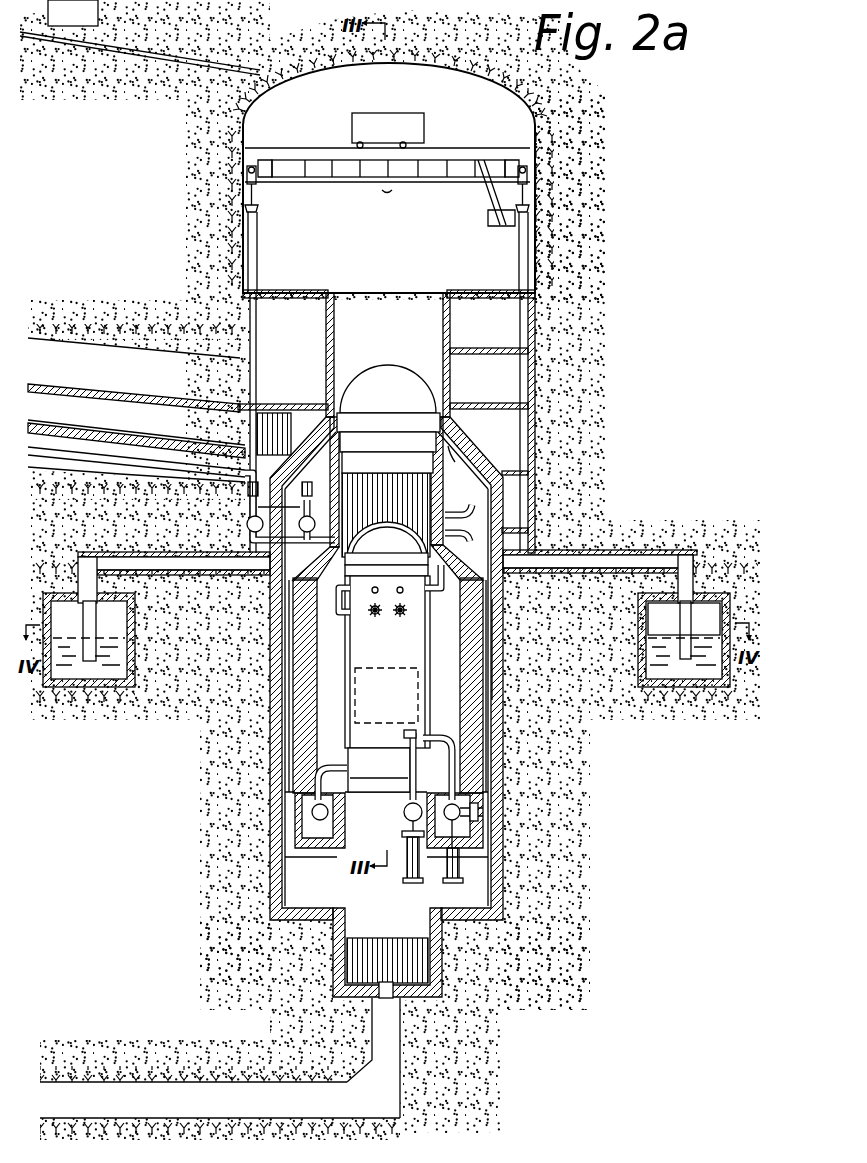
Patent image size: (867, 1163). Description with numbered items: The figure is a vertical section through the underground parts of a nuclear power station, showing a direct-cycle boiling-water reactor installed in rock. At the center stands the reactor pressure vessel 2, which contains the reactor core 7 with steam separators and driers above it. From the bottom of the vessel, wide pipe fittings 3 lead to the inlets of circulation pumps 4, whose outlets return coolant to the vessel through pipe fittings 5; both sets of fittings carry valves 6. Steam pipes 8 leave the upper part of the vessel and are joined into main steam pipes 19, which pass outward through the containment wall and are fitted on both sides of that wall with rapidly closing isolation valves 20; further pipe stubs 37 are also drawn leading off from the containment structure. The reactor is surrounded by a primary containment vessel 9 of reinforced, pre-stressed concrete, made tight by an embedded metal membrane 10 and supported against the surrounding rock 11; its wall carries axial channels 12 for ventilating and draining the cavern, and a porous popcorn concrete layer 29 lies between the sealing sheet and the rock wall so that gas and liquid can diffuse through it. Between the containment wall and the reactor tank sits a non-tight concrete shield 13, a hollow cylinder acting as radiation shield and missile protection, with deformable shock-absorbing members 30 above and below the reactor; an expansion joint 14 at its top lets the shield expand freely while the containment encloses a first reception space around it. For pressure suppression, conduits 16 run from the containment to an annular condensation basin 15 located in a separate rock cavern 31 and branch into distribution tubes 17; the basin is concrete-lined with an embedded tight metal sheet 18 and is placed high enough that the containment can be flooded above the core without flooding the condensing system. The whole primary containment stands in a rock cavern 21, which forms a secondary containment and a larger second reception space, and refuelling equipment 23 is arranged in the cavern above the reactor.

The reactor pressure vessel 2 is at (443, 578).
The pipe fittings 3 is at (434, 765).
The circulation pumps 4 is at (476, 851).
The pipe fittings 5 is at (486, 769).
The valves 6 is at (431, 806).
The reactor core 7 is at (452, 695).
The steam pipes 8 is at (444, 591).
The primary containment vessel 9 is at (515, 423).
The metal membrane 10 is at (438, 669).
The rock 11 is at (390, 570).
The axial channels 12 is at (416, 707).
The concrete shield 13 is at (422, 575).
The expansion joint 14 is at (460, 468).
The condensation basin 15 is at (657, 660).
The conduits 16 is at (598, 539).
The distribution tubes 17 is at (713, 601).
The tight metal sheet 18 is at (386, 639).
The main steam pipes 19 is at (136, 482).
The isolation valves 20 is at (257, 506).
The rock cavern 21 is at (389, 180).
The refuelling equipment 23 is at (387, 203).
The concrete layer 29 is at (527, 650).
The shock-absorbing members 30 is at (386, 795).
The rock cavern 31 is at (657, 618).
The pipe duct 37 is at (310, 482).